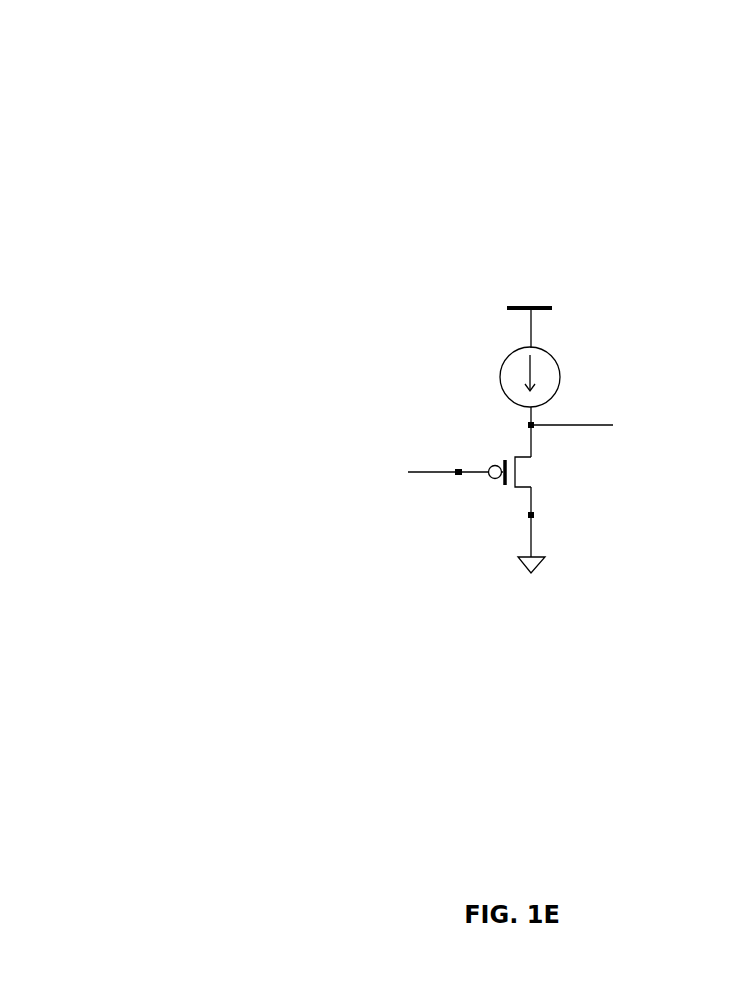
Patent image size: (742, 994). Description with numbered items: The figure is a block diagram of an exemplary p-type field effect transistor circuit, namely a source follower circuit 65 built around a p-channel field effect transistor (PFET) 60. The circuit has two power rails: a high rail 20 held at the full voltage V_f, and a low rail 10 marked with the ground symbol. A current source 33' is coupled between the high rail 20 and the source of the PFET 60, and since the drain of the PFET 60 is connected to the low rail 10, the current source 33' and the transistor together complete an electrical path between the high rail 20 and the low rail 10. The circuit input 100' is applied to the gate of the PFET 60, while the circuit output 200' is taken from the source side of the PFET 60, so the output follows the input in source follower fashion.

The source follower circuit 65 is at (125, 121).
The high rail 20 is at (548, 306).
The current source 33' is at (554, 382).
The circuit output 200' is at (582, 435).
The p-channel field effect transistor 60 is at (502, 462).
The circuit input 100' is at (447, 486).
The low rail 10 is at (515, 561).